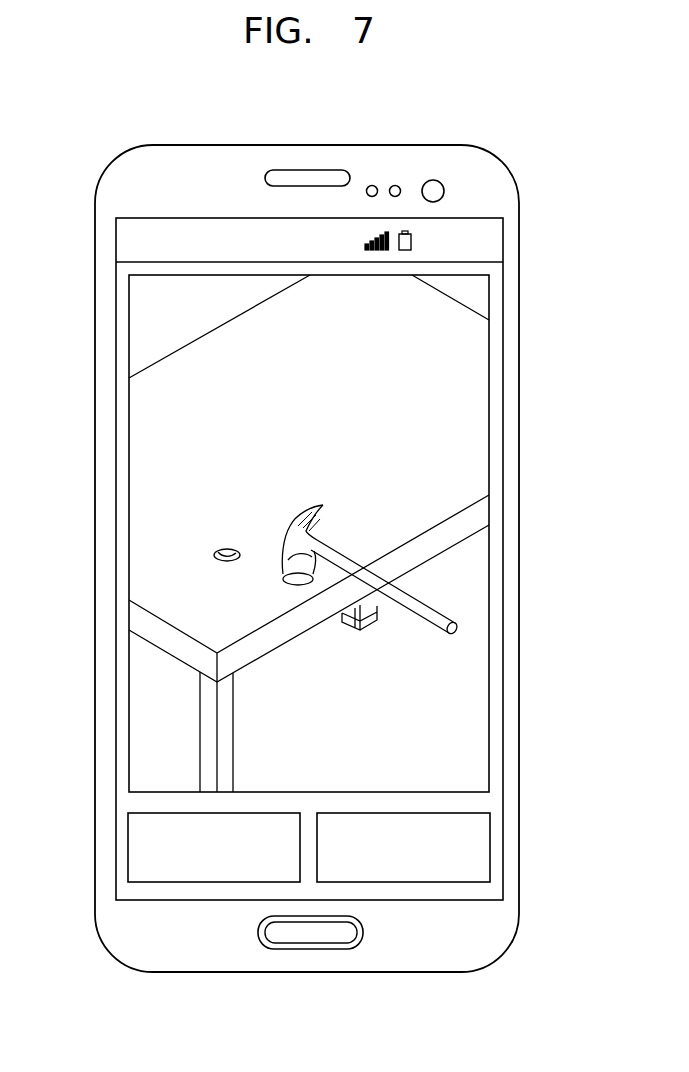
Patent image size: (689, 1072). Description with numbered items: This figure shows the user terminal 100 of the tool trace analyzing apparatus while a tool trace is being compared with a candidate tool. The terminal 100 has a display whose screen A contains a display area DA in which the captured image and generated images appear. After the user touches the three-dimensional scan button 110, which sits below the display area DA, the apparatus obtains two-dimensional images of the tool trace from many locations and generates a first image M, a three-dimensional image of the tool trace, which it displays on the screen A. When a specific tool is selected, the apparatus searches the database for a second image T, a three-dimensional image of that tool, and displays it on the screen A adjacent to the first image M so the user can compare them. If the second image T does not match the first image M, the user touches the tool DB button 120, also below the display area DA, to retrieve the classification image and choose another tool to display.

The electronic device (mobile terminal) 100 is at (310, 143).
The screen A is at (503, 384).
The display area DA is at (489, 440).
The first image M is at (214, 553).
The second image T is at (430, 613).
The 3D scan button 110 is at (118, 848).
The tool database (DB) button 120 is at (490, 848).